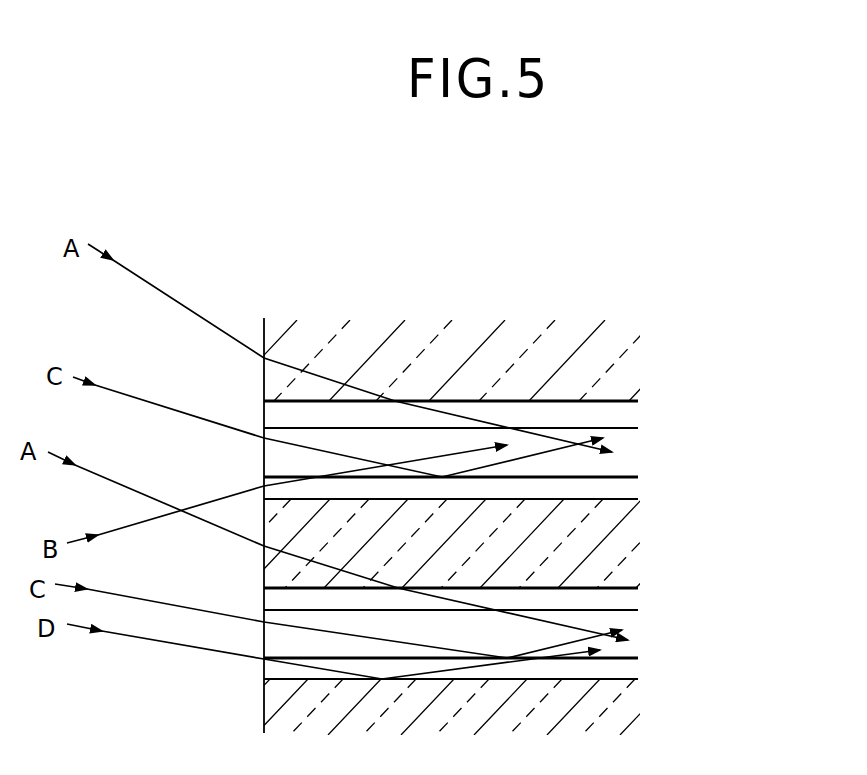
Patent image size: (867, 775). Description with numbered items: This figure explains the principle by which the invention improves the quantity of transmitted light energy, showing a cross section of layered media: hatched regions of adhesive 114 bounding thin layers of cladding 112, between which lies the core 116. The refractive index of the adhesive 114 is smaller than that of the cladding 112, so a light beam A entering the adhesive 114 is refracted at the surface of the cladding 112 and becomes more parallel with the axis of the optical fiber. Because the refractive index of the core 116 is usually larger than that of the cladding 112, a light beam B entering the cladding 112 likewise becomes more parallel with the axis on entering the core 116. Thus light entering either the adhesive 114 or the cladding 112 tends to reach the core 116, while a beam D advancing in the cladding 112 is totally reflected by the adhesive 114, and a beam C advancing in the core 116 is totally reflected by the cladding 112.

The adhesive 114 is at (625, 379).
The cladding 112 is at (625, 422).
The core 116 is at (628, 452).